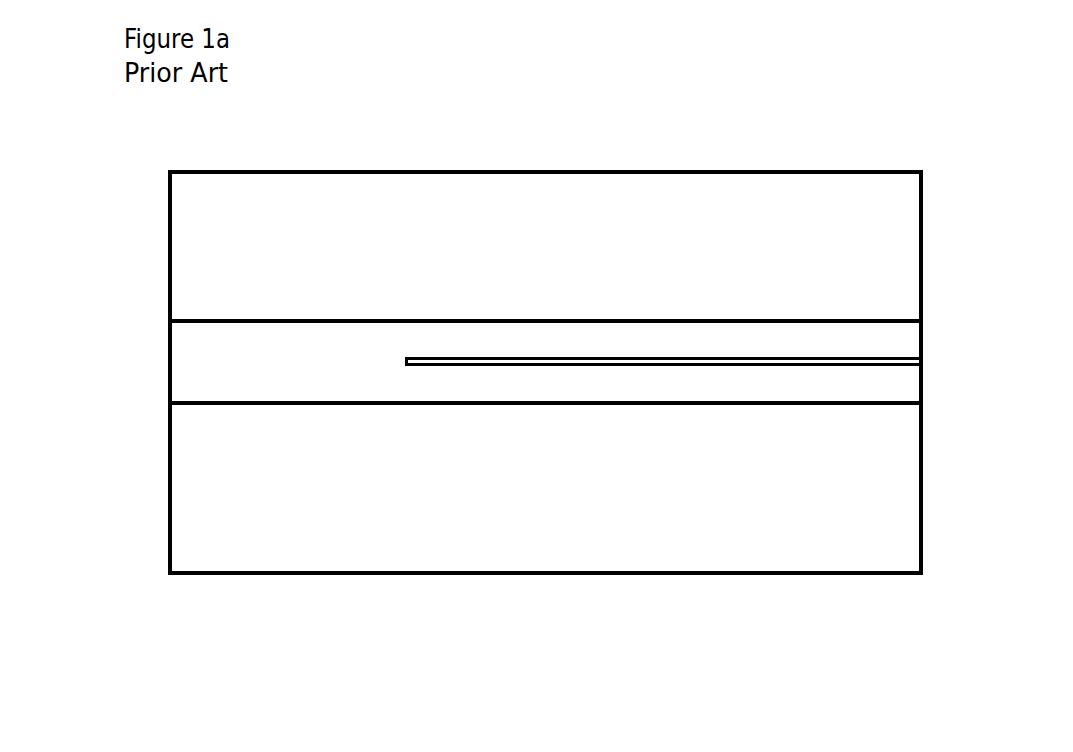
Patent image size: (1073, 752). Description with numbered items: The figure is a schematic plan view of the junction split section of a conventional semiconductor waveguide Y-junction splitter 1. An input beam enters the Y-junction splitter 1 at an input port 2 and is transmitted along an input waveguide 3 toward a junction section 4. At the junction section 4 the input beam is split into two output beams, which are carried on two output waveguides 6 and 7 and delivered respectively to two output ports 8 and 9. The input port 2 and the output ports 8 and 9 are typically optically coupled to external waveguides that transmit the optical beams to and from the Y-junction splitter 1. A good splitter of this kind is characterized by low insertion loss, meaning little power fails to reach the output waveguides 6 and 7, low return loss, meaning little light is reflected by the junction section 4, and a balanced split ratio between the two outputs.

The semiconductor waveguide Y-junction splitter 1 is at (510, 125).
The input port 2 is at (168, 362).
The input waveguide 3 is at (274, 370).
The junction section 4 is at (397, 369).
The output waveguide 6 is at (681, 338).
The output waveguide 7 is at (690, 392).
The output port 8 is at (926, 337).
The output port 9 is at (925, 383).